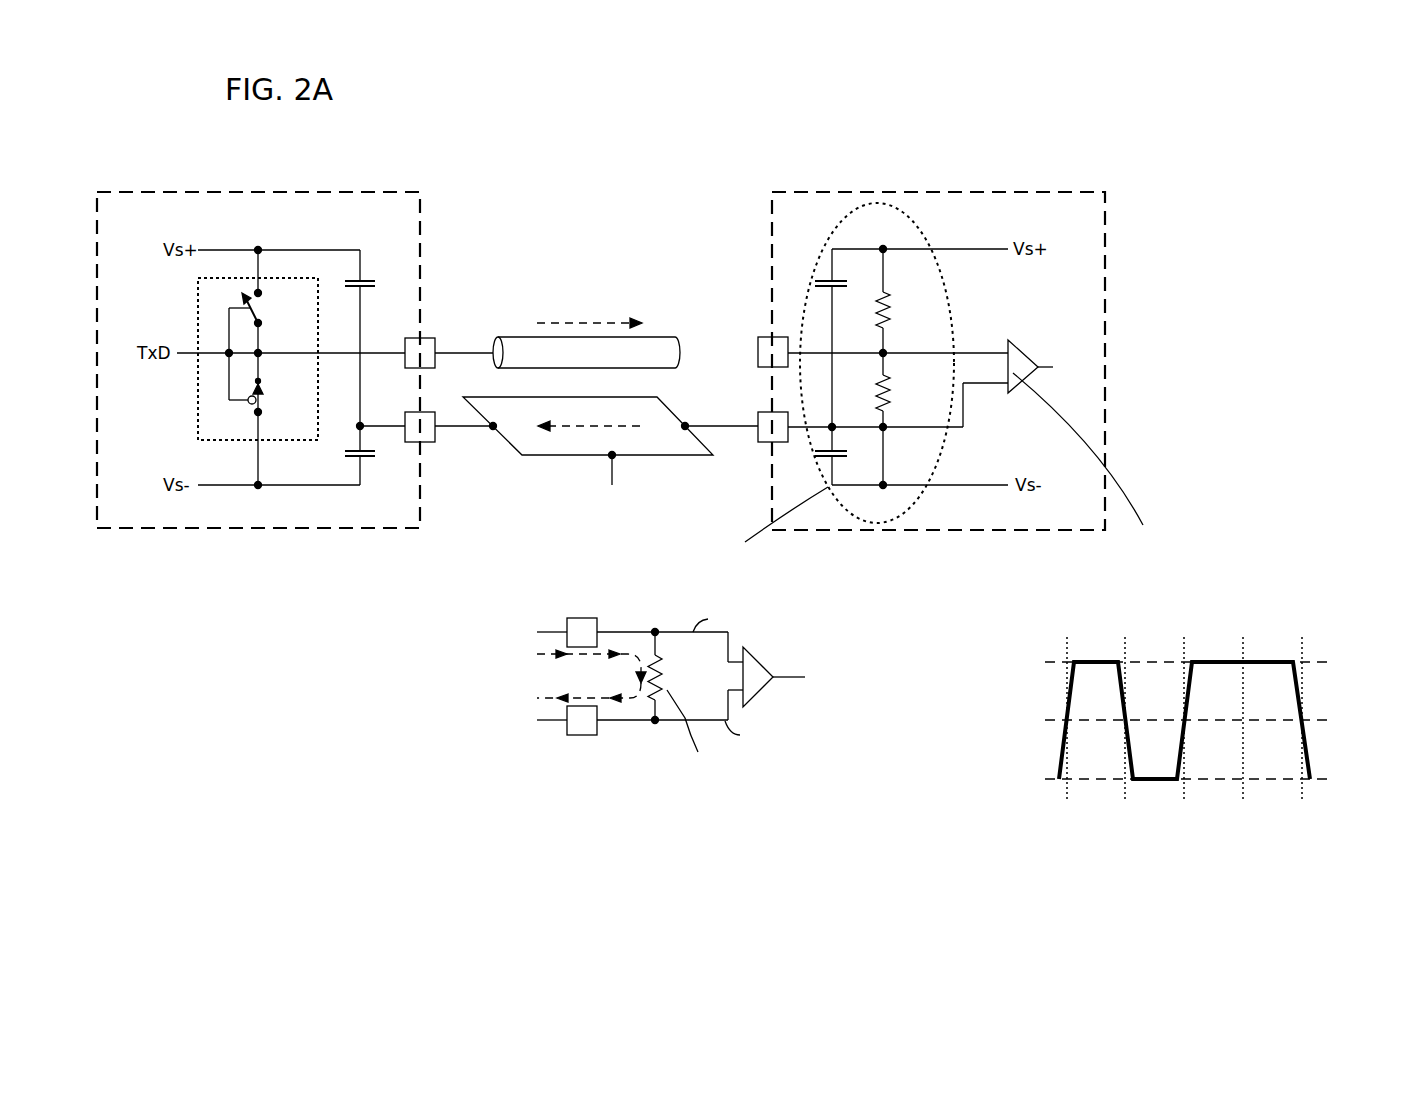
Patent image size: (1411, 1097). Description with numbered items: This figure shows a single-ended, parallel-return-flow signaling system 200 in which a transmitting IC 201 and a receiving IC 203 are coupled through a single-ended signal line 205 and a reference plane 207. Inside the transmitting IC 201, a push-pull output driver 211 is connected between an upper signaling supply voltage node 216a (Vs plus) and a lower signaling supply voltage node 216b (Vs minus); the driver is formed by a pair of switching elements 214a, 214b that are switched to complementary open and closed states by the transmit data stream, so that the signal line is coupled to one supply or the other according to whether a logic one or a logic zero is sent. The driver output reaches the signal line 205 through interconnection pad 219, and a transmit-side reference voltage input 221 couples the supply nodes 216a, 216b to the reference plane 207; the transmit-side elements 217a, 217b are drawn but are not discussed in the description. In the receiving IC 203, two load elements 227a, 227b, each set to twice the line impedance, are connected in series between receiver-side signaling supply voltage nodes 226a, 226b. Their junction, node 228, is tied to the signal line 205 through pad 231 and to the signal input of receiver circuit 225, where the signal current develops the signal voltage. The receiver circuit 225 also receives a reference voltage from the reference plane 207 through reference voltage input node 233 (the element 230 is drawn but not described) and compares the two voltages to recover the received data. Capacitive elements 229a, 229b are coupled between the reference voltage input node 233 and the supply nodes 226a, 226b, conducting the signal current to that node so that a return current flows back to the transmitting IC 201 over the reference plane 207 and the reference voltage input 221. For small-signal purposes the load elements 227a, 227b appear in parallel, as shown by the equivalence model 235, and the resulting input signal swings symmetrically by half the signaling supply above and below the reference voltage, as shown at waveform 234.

The single-ended signaling system 200 is at (352, 604).
The transmitting integrated circuit device 201 is at (391, 222).
The receiving integrated circuit device 203 is at (1068, 222).
The single-ended signaling conductor 205 is at (653, 369).
The reference plane 207 is at (642, 456).
The push-pull output driver 211 is at (258, 367).
The switching element 214a is at (270, 323).
The switching element 214b is at (212, 432).
The upper signaling supply voltage node 216a is at (270, 250).
The lower signaling supply voltage node 216b is at (270, 487).
The transmitter decoupling capacitor 217a is at (368, 279).
The transmitter decoupling capacitor 217b is at (370, 460).
The interconnection pad 219 is at (430, 337).
The transmit-side reference voltage input 221 is at (430, 443).
The receiver circuit 225 is at (1017, 348).
The receiver-side signaling supply voltage node 226a is at (940, 250).
The receiver-side signaling supply voltage node 226b is at (942, 486).
The load element 227a is at (897, 315).
The load element 227b is at (897, 386).
The node 228 is at (889, 352).
The capacitive element 229a is at (822, 281).
The capacitive element 229b is at (827, 458).
The receiver reference node VREF 230 is at (958, 428).
The pad 231 is at (770, 337).
The reference voltage input node 233 is at (770, 443).
The input signal waveform 234 is at (1170, 606).
The small-signal equivalence model 235 is at (690, 573).